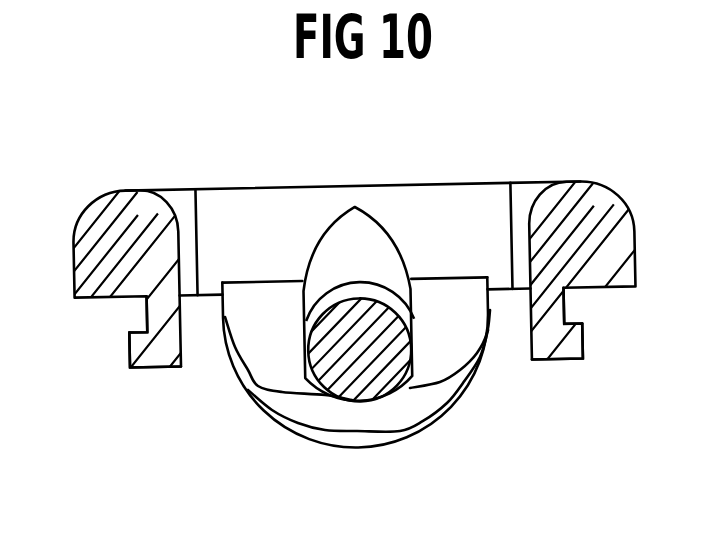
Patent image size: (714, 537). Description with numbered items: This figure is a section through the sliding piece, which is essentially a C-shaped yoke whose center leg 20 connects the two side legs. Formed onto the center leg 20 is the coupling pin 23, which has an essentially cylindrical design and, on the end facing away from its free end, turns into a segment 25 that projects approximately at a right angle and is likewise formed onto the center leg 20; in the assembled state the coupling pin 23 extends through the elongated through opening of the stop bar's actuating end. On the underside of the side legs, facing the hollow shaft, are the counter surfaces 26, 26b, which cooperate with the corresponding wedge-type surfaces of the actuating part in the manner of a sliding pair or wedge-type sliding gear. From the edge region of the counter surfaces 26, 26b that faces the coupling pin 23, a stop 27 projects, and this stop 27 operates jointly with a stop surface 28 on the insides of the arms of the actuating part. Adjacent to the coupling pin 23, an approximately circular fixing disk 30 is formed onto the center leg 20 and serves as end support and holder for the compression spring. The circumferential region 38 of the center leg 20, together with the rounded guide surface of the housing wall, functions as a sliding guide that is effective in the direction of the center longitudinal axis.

The center leg 20 is at (298, 212).
The coupling pin 23 is at (363, 360).
The segment 25 is at (377, 248).
The counter surface 26 is at (600, 290).
The counter surface 26b is at (107, 300).
The stop 27 is at (160, 370).
The stop surface 28 is at (130, 360).
The fixing disk 30 is at (265, 327).
The circumferential region 38 is at (218, 212).